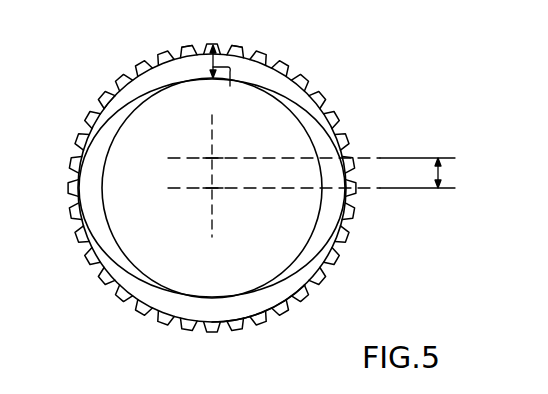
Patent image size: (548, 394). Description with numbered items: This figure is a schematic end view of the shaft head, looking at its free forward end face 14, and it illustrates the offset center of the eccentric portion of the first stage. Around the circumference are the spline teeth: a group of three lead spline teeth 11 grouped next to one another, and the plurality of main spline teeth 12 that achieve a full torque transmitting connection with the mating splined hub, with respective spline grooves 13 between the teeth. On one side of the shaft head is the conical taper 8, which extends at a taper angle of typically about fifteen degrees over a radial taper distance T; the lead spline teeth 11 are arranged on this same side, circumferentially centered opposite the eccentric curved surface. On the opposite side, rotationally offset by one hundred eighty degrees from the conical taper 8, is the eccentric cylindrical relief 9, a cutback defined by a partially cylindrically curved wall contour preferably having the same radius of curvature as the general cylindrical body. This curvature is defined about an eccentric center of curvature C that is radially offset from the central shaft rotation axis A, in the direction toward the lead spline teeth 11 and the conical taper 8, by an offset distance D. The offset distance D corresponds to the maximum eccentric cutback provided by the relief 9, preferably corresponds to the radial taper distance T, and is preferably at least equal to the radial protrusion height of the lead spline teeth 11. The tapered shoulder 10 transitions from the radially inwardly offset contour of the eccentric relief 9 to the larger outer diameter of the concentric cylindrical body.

The conical taper 8 is at (299, 113).
The eccentric cylindrical relief 9 is at (321, 247).
The tapered shoulder 10 is at (256, 302).
The lead spline teeth 11 is at (188, 44).
The main spline teeth 12 is at (122, 83).
The spline grooves 13 is at (112, 95).
The forward end face 14 is at (181, 244).
The radial taper distance T is at (223, 83).
The eccentric center of curvature C is at (215, 156).
The shaft axis A is at (215, 191).
The offset distance D is at (444, 173).